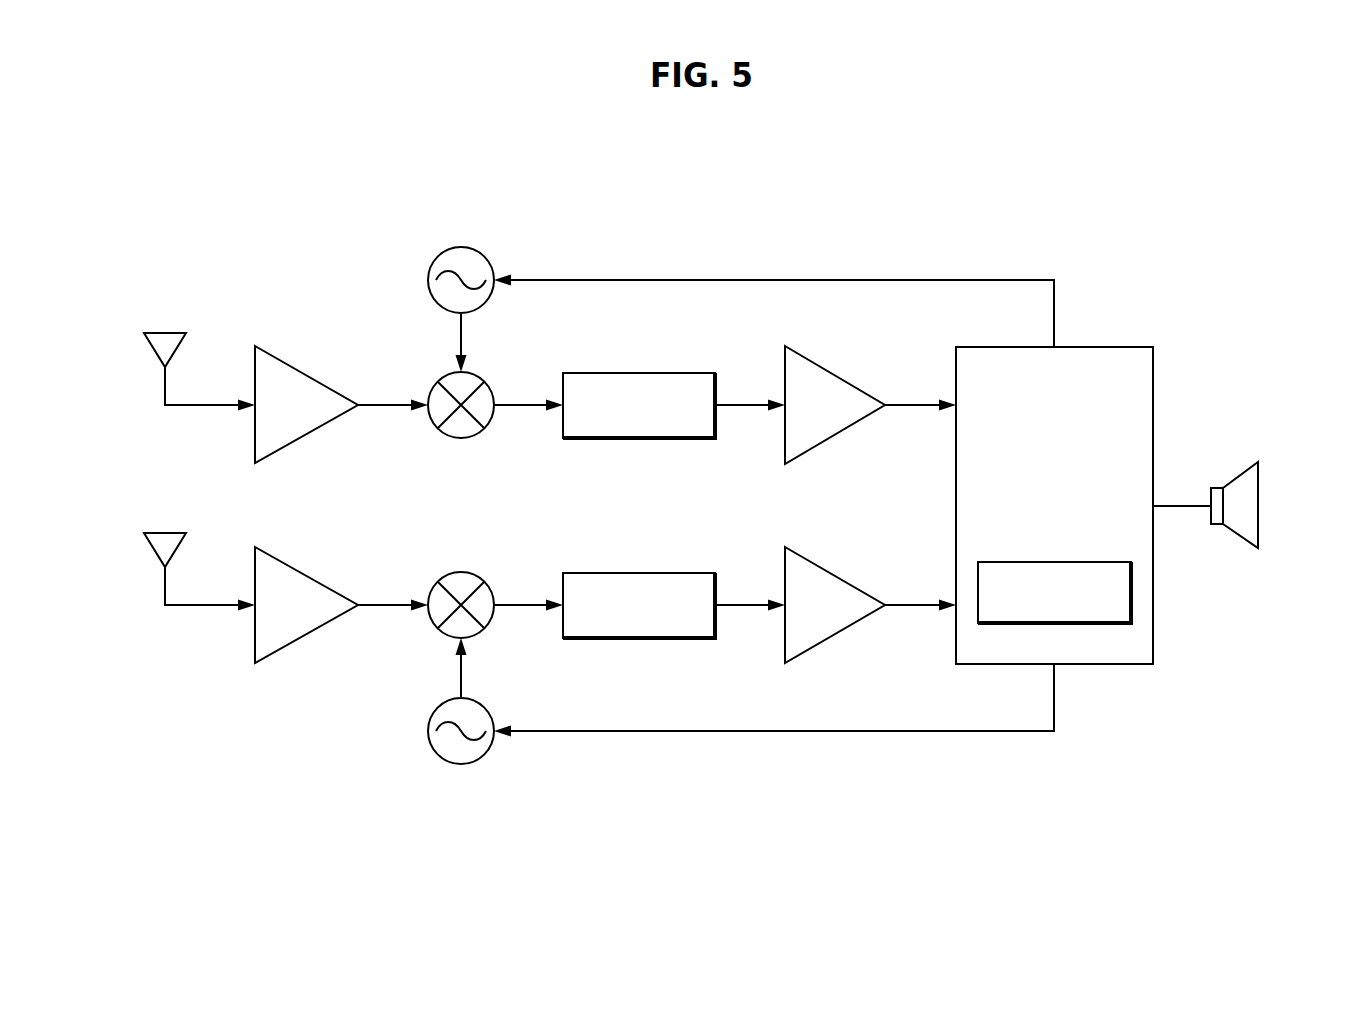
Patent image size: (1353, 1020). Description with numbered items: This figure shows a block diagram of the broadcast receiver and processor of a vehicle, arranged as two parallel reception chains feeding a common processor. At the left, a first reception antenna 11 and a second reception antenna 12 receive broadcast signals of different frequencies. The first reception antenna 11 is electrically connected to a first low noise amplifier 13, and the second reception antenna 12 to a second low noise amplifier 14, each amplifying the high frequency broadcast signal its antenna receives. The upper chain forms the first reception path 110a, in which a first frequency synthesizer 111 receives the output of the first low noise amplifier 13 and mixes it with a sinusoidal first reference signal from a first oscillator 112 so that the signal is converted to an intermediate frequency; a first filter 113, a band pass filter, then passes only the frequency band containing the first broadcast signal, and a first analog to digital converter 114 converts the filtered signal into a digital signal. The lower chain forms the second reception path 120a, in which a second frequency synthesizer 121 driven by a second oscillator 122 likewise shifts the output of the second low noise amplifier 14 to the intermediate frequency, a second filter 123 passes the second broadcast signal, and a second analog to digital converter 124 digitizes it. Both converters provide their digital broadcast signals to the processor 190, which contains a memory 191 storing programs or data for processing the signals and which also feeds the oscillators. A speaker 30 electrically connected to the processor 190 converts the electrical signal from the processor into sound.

The first reception antenna 11 is at (151, 334).
The second reception antenna 12 is at (151, 532).
The first low noise amplifier 13 is at (310, 375).
The second low noise amplifier 14 is at (310, 575).
The first frequency synthesizer 111 is at (438, 381).
The first oscillator 112 is at (438, 256).
The first filter 113 is at (637, 373).
The first analog to digital converter 114 is at (838, 376).
The first reception path 110a is at (695, 264).
The second frequency synthesizer 121 is at (438, 582).
The second oscillator 122 is at (438, 706).
The second filter 123 is at (637, 573).
The second analog to digital converter 124 is at (838, 576).
The second reception path 120a is at (707, 751).
The processor 190 is at (1112, 347).
The memory 191 is at (1053, 562).
The speaker 30 is at (1243, 462).